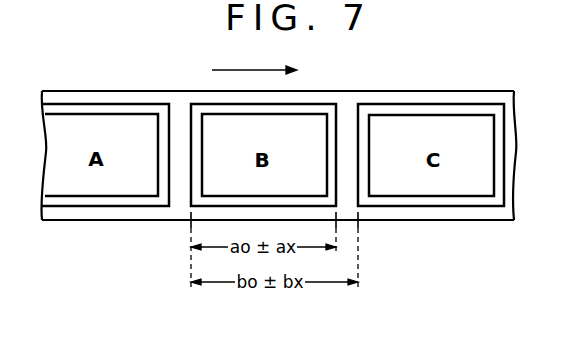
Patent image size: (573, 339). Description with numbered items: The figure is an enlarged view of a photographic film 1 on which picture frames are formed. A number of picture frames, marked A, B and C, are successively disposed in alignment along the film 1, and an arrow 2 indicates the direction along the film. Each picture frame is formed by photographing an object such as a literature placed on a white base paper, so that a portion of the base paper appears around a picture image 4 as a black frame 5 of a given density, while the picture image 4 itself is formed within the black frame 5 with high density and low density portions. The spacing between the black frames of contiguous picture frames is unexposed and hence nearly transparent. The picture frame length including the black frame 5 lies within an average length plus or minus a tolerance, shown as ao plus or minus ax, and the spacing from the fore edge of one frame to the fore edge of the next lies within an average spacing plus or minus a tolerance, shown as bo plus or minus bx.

The film 1 is at (345, 105).
The direction of travel arrow 2 is at (268, 67).
The picture image 4 is at (88, 122).
The black frame 5 is at (147, 105).